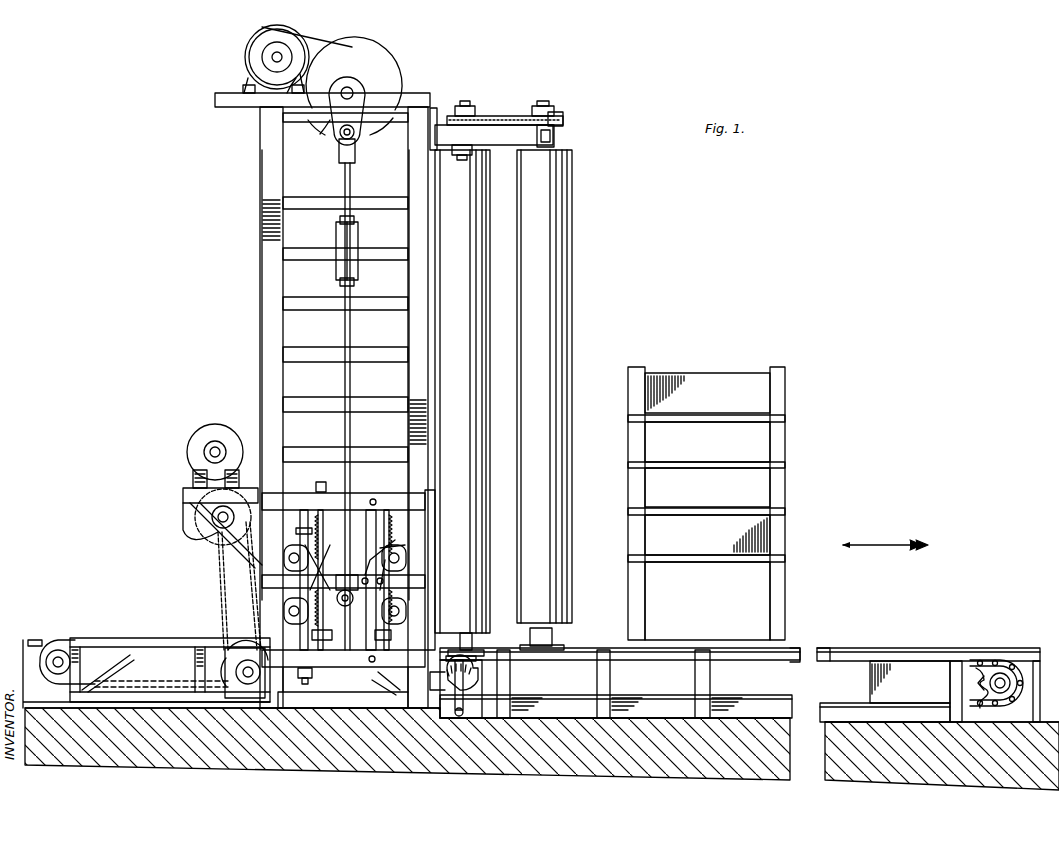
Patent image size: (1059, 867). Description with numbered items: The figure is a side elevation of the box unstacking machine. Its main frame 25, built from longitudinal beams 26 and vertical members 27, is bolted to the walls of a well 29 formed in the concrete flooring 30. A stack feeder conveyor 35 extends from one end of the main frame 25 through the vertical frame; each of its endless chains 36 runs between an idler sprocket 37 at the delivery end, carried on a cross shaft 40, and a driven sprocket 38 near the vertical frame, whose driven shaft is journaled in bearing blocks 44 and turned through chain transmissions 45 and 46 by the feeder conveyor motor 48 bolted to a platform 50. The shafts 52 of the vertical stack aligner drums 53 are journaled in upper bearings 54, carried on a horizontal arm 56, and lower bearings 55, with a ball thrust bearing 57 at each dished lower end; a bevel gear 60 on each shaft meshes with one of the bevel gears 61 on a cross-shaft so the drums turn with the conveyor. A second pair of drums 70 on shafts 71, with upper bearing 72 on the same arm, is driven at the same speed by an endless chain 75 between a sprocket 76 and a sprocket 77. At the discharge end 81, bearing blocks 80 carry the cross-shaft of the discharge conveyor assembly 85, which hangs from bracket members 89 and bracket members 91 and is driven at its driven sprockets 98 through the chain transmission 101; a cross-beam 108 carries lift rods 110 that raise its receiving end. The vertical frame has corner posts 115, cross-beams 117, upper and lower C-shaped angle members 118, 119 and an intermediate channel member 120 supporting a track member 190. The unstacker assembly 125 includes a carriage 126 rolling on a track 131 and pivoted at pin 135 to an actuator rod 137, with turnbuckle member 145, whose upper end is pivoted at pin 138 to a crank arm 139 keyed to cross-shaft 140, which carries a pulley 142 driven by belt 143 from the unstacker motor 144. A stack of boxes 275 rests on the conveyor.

The main frame 25 is at (835, 648).
The longitudinal beams 26 is at (892, 660).
The vertical members 27 is at (512, 682).
The well 29 is at (1012, 660).
The concrete flooring 30 is at (1040, 656).
The stack feeder conveyor 35 is at (952, 648).
The endless chains 36 is at (800, 646).
The idler sprockets 37 is at (988, 664).
The driven sprockets 38 is at (226, 656).
The cross shaft 40 is at (990, 683).
The bearing blocks 44 is at (244, 658).
The chain transmission 45 is at (218, 583).
The chain transmission 46 is at (197, 527).
The feeder conveyor motor 48 is at (197, 452).
The platform 50 is at (183, 495).
The shafts 52 is at (258, 350).
The vertical stack aligner drums 53 is at (436, 283).
The upper bearings 54 is at (462, 156).
The lower bearings 55 is at (470, 650).
The horizontal arm 56 is at (440, 128).
The ball thrust bearing 57 is at (462, 700).
The bevel gear 60 is at (505, 667).
The bevel gears 61 is at (450, 695).
The drums 70 is at (566, 259).
The shafts 71 is at (548, 106).
The upper bearing 72 is at (556, 133).
The endless chain 75 is at (510, 116).
The sprocket 76 is at (458, 106).
The sprocket 77 is at (562, 116).
The bearing blocks 80 is at (146, 674).
The discharge end 81 is at (106, 640).
The discharge conveyor assembly 85 is at (60, 660).
The bracket members 89 is at (122, 670).
The bracket members 91 is at (385, 680).
The driven sprockets 98 is at (50, 650).
The chain transmission 101 is at (33, 640).
The cross-beam 108 is at (296, 672).
The lift rods 110 is at (310, 676).
The vertical corner posts 115 is at (260, 222).
The horizontal cross-beams 117 is at (398, 112).
The upper C-shaped angle member 118 is at (355, 500).
The lower C-shaped angle member 119 is at (343, 621).
The intermediate C-shaped channel member 120 is at (260, 582).
The unstacker assembly 125 is at (303, 524).
The carriage 126 is at (400, 550).
The track 131 is at (430, 480).
The pivot pin 135 is at (331, 584).
The actuator rod 137 is at (351, 181).
The pin 138 is at (357, 131).
The crank arm 139 is at (331, 120).
The cross-shaft 140 is at (352, 92).
The pulley 142 is at (367, 60).
The belt 143 is at (326, 46).
The unstacker motor 144 is at (246, 50).
The turnbuckle member 145 is at (352, 232).
The track member 190 is at (382, 527).
The stack of boards 275 is at (788, 430).